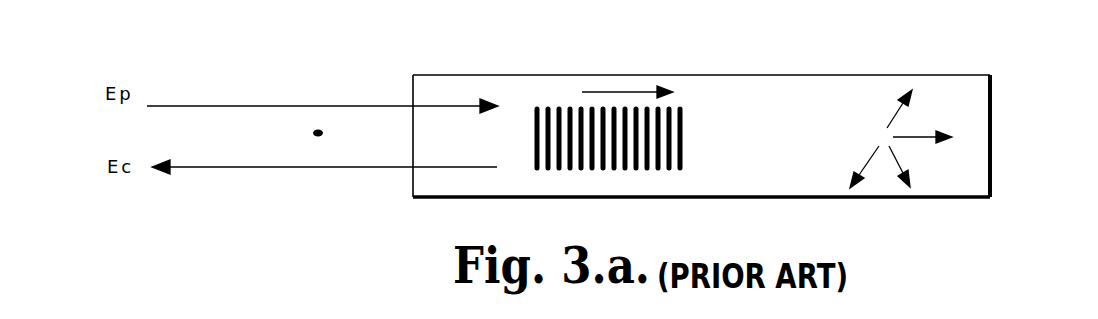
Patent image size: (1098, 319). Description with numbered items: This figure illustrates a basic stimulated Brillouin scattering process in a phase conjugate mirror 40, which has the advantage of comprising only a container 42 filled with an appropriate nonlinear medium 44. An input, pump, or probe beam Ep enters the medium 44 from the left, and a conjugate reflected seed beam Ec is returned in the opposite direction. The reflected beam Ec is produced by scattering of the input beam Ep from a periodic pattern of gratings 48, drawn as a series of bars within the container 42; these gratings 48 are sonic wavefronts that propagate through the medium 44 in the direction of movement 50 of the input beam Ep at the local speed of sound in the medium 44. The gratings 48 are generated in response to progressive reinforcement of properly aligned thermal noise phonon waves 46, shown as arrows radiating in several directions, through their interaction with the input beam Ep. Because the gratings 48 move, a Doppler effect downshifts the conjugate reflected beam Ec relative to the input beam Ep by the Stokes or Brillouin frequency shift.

The phase conjugate mirror 40 is at (993, 155).
The container 42 is at (993, 81).
The nonlinear medium 44 is at (962, 183).
The thermal noise phonon waves 46 is at (923, 138).
The gratings 48 is at (692, 102).
The direction of movement 50 is at (602, 92).